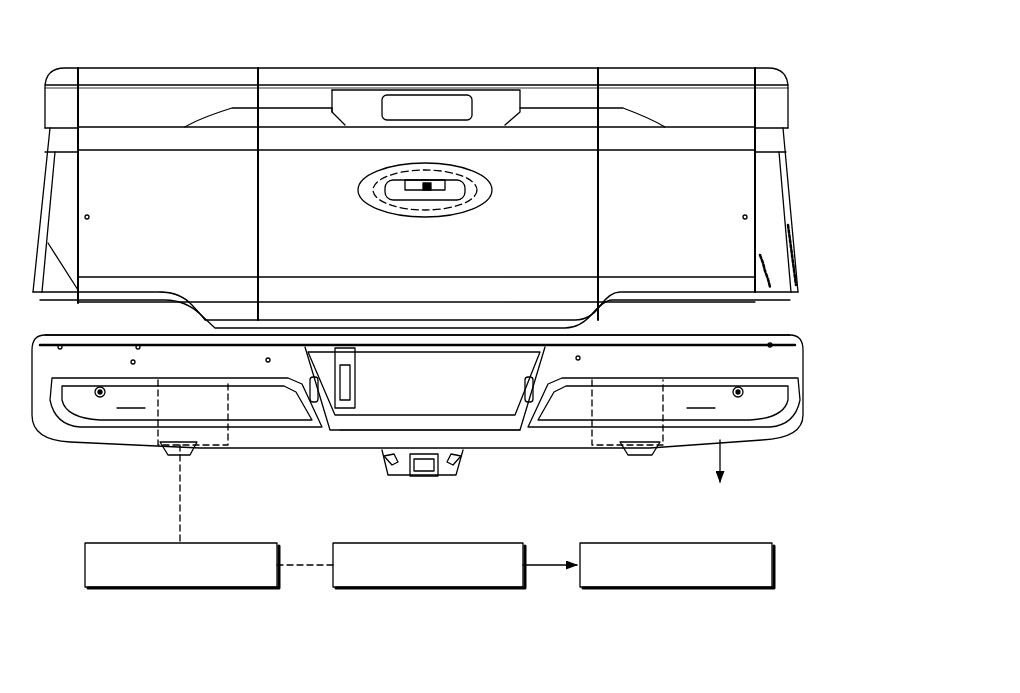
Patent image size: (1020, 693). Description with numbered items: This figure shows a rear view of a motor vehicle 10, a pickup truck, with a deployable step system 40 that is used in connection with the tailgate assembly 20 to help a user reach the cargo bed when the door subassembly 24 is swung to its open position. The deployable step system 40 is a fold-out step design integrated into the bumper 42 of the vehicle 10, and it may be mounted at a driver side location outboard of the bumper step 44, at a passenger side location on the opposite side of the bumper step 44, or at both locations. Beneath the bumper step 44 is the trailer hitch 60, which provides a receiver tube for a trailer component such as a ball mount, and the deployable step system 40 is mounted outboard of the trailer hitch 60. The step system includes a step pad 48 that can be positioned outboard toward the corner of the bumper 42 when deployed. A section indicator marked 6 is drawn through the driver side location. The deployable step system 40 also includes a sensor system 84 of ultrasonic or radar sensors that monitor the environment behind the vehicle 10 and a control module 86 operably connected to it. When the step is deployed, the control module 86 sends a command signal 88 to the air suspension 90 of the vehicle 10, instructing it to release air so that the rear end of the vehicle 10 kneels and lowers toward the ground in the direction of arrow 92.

The motor vehicle 10 is at (708, 30).
The tailgate assembly 20 is at (752, 58).
The door subassembly 24 is at (554, 114).
The deployable step system 40 is at (165, 444).
The bumper 42 is at (779, 385).
The bumper step 44 is at (460, 430).
The step pad 48 is at (190, 360).
The trailer hitch 60 is at (437, 477).
The sensor system 84 is at (150, 543).
The control module 86 is at (384, 543).
The command signal 88 is at (547, 565).
The air suspension 90 is at (706, 543).
The arrow 92 is at (722, 458).
The section line 6 is at (195, 488).